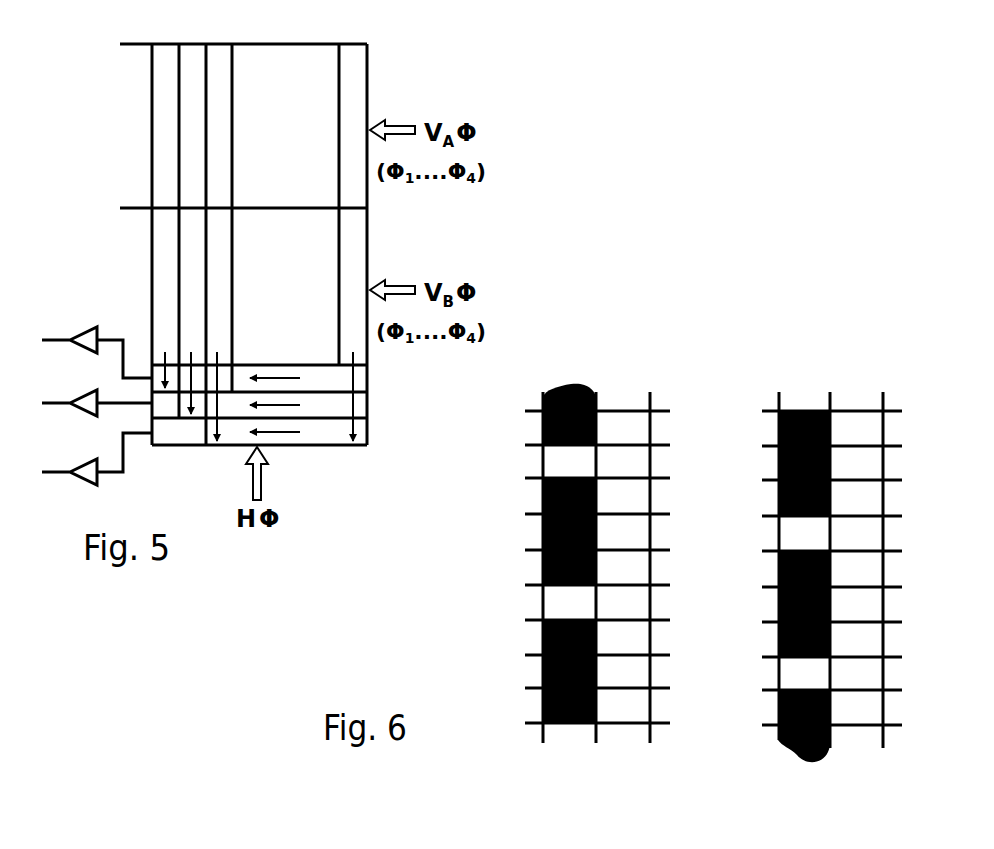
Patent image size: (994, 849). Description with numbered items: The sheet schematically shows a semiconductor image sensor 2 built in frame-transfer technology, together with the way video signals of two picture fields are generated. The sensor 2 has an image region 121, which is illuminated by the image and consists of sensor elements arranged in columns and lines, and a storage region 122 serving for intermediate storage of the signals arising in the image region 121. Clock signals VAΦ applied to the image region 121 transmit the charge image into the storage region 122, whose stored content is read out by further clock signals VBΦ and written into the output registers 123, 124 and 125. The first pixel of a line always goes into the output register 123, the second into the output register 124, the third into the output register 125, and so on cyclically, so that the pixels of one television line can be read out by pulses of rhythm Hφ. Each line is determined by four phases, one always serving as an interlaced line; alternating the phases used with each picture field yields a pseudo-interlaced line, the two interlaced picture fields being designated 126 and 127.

In FIG. 5, the semiconductor image sensor 2 is at (364, 37).
In FIG. 5, the image region 121 is at (358, 80).
In FIG. 5, the storage region 122 is at (358, 248).
In FIG. 5, the output register 123 is at (358, 380).
In FIG. 5, the output register 124 is at (358, 407).
In FIG. 5, the output register 125 is at (358, 435).
In FIG. 6, the interlaced picture field 126 is at (569, 596).
In FIG. 6, the interlaced picture field 127 is at (801, 600).